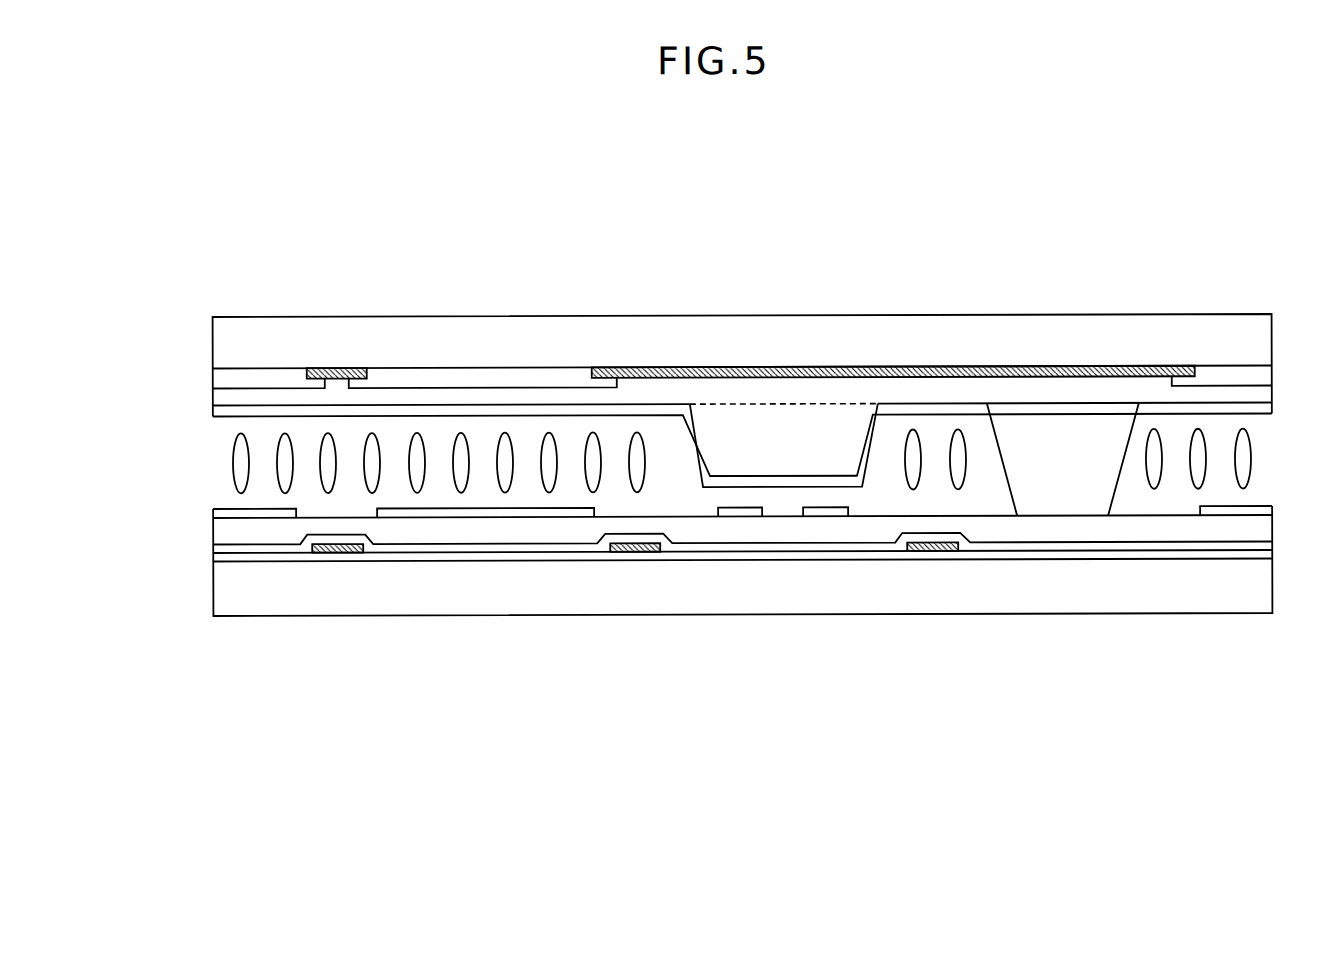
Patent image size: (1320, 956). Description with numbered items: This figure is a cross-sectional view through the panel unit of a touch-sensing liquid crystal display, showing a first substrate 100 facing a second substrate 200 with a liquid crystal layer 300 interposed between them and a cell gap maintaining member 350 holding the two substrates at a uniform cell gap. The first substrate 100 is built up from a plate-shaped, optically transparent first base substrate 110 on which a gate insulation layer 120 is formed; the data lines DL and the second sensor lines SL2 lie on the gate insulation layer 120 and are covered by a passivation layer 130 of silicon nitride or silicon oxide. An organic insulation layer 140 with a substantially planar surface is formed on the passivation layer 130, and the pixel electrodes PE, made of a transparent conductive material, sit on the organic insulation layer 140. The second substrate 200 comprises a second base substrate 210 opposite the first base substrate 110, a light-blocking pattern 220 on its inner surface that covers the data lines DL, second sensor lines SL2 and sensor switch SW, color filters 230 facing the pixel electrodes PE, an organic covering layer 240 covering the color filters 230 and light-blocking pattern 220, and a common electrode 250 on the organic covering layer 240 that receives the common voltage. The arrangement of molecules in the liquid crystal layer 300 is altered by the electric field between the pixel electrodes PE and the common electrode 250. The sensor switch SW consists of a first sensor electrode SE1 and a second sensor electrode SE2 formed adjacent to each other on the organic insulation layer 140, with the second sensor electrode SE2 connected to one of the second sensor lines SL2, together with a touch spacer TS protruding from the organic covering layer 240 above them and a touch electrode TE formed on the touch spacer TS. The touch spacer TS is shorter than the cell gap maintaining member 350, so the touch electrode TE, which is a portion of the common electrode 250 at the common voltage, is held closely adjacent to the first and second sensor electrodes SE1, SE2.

The first substrate 100 is at (207, 509).
The first base substrate 110 is at (383, 593).
The gate insulation layer 120 is at (440, 558).
The passivation layer 130 is at (494, 548).
The organic insulation layer 140 is at (548, 533).
The second substrate 200 is at (207, 318).
The second base substrate 210 is at (465, 340).
The light-blocking pattern 220 is at (655, 368).
The color filters 230 is at (535, 380).
The organic covering layer 240 is at (808, 388).
The common electrode 250 is at (390, 410).
The liquid crystal layer 300 is at (222, 462).
The cell gap maintaining member 350 is at (1060, 440).
The data lines DL is at (333, 551).
The pixel electrodes PE is at (570, 516).
The first sensor electrode SE1 is at (742, 518).
The touch spacer TS is at (784, 458).
The second sensor electrode SE2 is at (828, 518).
The touch electrode TE is at (845, 481).
The second sensor lines SL2 is at (933, 553).
The sensor switch SW is at (725, 683).